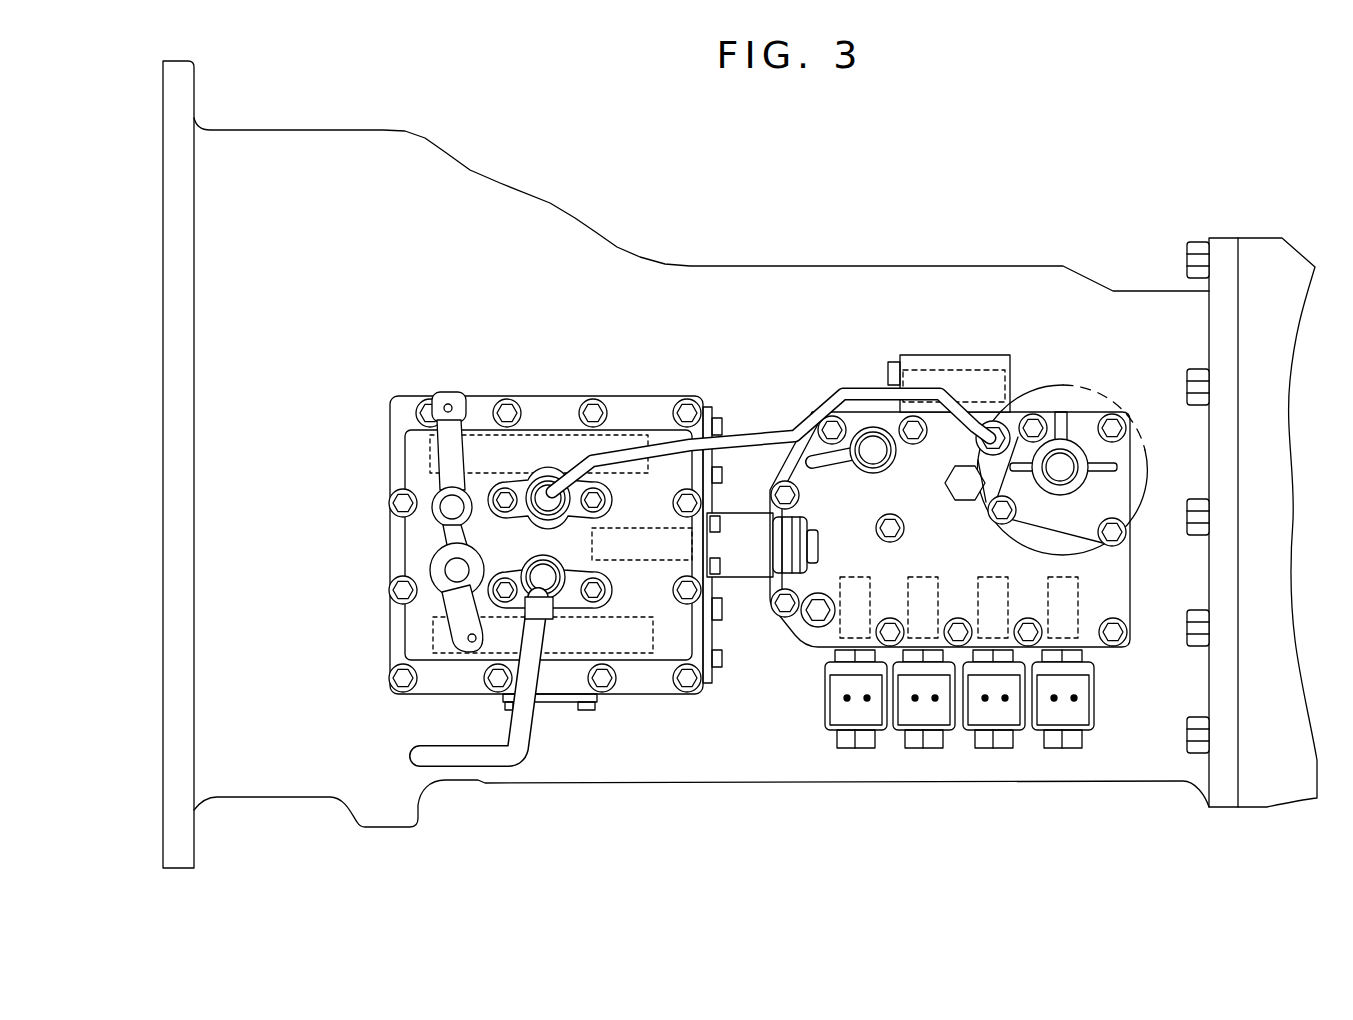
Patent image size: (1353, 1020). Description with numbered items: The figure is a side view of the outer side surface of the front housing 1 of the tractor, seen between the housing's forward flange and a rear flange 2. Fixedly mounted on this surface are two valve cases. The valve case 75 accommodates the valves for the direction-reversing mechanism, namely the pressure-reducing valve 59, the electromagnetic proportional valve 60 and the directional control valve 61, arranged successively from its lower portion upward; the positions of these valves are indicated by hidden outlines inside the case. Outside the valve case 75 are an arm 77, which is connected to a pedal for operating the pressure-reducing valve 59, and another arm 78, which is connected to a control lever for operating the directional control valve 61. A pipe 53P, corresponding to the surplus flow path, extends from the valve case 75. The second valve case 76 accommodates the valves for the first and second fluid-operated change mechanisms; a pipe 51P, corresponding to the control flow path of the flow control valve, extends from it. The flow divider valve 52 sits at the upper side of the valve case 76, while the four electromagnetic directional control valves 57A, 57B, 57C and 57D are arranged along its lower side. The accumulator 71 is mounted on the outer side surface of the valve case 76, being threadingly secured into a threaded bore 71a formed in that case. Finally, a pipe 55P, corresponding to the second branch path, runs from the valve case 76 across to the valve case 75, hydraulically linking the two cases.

The front housing 1 is at (522, 213).
The flywheel housing flange 2 is at (1253, 263).
The pipe 51P is at (832, 460).
The flow divider valve 52 is at (960, 360).
The pipe 53P is at (497, 753).
The pipe 55P is at (757, 447).
The electromagnetic directional control valve 57A is at (830, 628).
The electromagnetic directional control valve 57B is at (923, 708).
The electromagnetic directional control valve 57C is at (1010, 703).
The electromagnetic directional control valve 57D is at (1070, 620).
The pressure-reducing valve 59 is at (630, 645).
The electromagnetic proportional valve 60 is at (738, 533).
The directional control valve 61 is at (538, 450).
The accumulator 71 is at (1071, 444).
The threaded bore 71a is at (1065, 472).
The valve case 75 is at (512, 547).
The valve case 76 is at (957, 516).
The arm 77 is at (457, 602).
The arm 78 is at (440, 423).